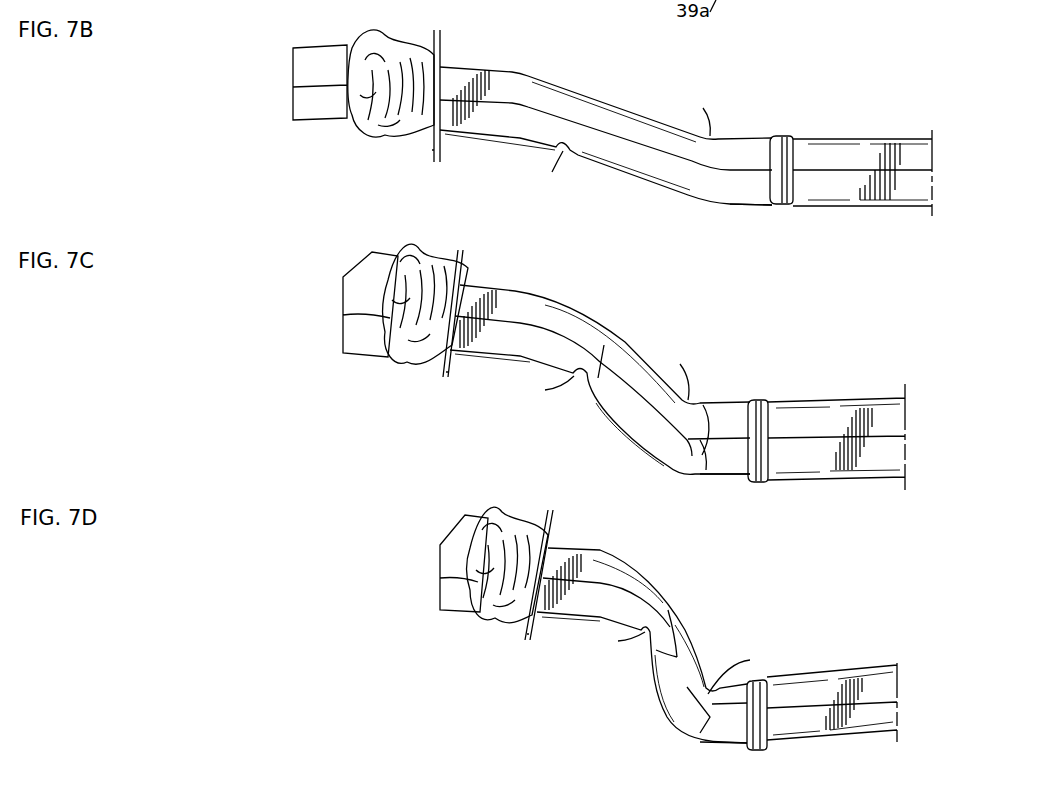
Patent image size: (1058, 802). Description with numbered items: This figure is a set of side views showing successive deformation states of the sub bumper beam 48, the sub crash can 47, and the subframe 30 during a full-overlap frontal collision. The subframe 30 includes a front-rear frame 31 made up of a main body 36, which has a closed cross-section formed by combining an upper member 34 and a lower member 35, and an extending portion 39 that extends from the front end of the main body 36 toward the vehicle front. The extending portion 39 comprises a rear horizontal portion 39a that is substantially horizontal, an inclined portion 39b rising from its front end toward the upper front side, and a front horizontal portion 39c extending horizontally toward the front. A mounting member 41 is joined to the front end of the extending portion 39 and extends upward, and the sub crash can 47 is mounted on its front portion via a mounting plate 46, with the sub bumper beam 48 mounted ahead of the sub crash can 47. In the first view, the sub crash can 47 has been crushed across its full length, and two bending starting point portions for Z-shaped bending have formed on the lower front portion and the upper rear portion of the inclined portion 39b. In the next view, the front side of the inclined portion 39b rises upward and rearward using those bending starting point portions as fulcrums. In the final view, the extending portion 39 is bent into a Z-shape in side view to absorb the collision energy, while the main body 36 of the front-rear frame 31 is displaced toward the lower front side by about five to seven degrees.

In FIG. 7B, the subframe 30 is at (835, 135).
In FIG. 7C, the subframe 30 is at (798, 399).
In FIG. 7D, the subframe 30 is at (796, 660).
In FIG. 7B, the front-rear frame 31 is at (742, 126).
In FIG. 7C, the front-rear frame 31 is at (714, 382).
In FIG. 7D, the front-rear frame 31 is at (728, 652).
In FIG. 7B, the upper member 34 is at (820, 152).
In FIG. 7C, the upper member 34 is at (797, 414).
In FIG. 7D, the upper member 34 is at (792, 690).
In FIG. 7B, the lower member 35 is at (852, 186).
In FIG. 7C, the lower member 35 is at (830, 446).
In FIG. 7D, the lower member 35 is at (866, 712).
In FIG. 7B, the main body 36 is at (862, 139).
In FIG. 7C, the main body 36 is at (836, 399).
In FIG. 7D, the main body 36 is at (832, 657).
In FIG. 7B, the extending portion 39 is at (606, 143).
In FIG. 7C, the extending portion 39 is at (600, 390).
In FIG. 7D, the extending portion 39 is at (648, 651).
In FIG. 7B, the rear horizontal portion 39a is at (748, 206).
In FIG. 7C, the rear horizontal portion 39a is at (720, 476).
In FIG. 7D, the rear horizontal portion 39a is at (723, 745).
In FIG. 7B, the inclined portion 39b is at (610, 172).
In FIG. 7C, the inclined portion 39b is at (612, 420).
In FIG. 7D, the inclined portion 39b is at (654, 690).
In FIG. 7B, the front horizontal portion 39c is at (457, 134).
In FIG. 7C, the front horizontal portion 39c is at (470, 354).
In FIG. 7D, the front horizontal portion 39c is at (546, 614).
In FIG. 7B, the mounting member 41 is at (442, 52).
In FIG. 7C, the mounting member 41 is at (466, 272).
In FIG. 7D, the mounting member 41 is at (552, 530).
In FIG. 7B, the mounting plate 46 is at (432, 150).
In FIG. 7C, the mounting plate 46 is at (440, 376).
In FIG. 7D, the mounting plate 46 is at (524, 636).
In FIG. 7B, the sub crash can 47 is at (392, 46).
In FIG. 7C, the sub crash can 47 is at (410, 242).
In FIG. 7D, the sub crash can 47 is at (496, 504).
In FIG. 7B, the sub bumper beam 48 is at (307, 117).
In FIG. 7C, the sub bumper beam 48 is at (354, 356).
In FIG. 7D, the sub bumper beam 48 is at (438, 588).